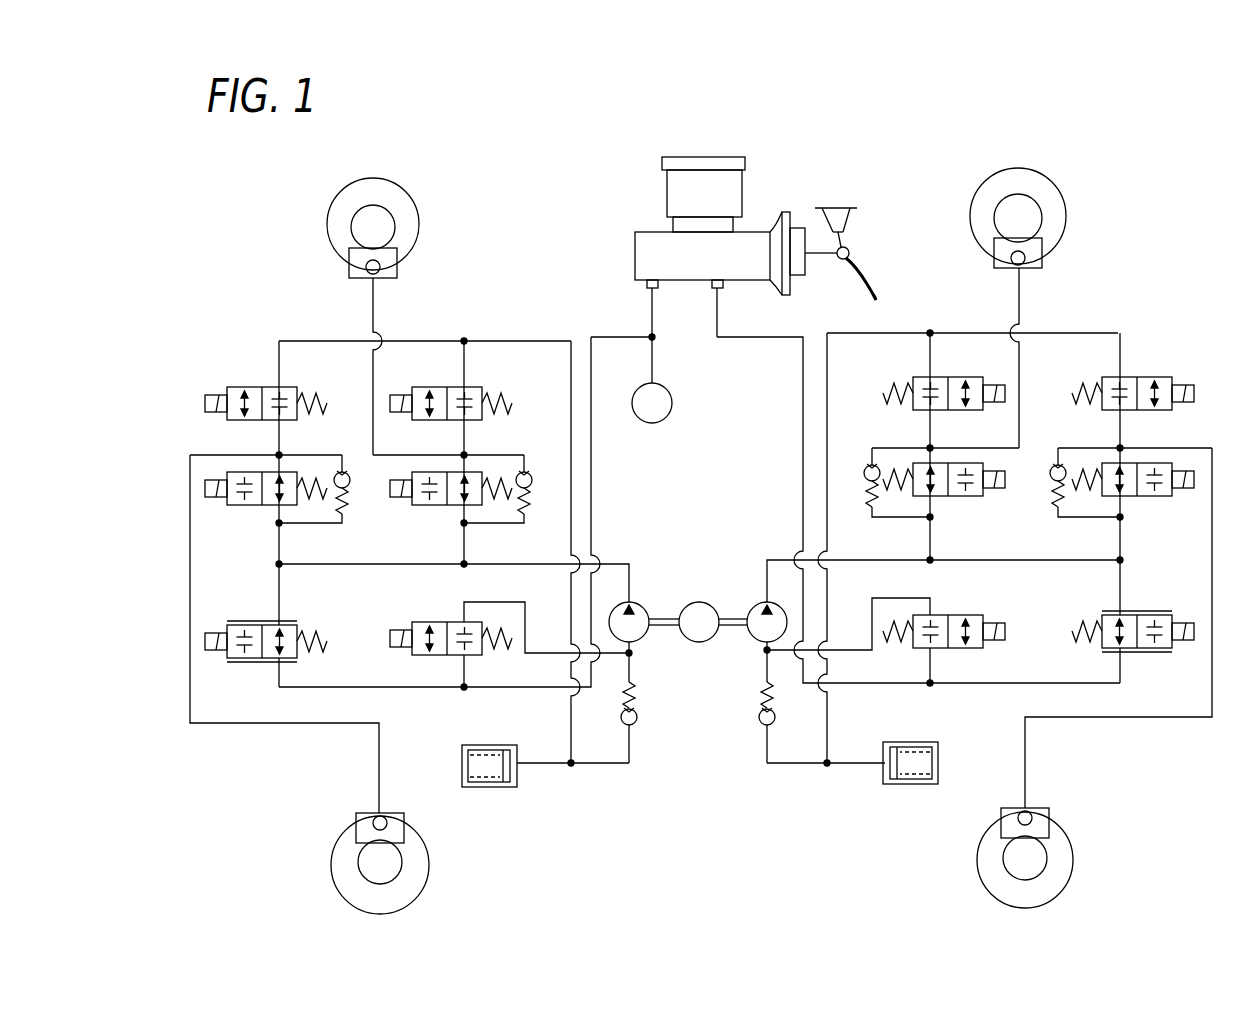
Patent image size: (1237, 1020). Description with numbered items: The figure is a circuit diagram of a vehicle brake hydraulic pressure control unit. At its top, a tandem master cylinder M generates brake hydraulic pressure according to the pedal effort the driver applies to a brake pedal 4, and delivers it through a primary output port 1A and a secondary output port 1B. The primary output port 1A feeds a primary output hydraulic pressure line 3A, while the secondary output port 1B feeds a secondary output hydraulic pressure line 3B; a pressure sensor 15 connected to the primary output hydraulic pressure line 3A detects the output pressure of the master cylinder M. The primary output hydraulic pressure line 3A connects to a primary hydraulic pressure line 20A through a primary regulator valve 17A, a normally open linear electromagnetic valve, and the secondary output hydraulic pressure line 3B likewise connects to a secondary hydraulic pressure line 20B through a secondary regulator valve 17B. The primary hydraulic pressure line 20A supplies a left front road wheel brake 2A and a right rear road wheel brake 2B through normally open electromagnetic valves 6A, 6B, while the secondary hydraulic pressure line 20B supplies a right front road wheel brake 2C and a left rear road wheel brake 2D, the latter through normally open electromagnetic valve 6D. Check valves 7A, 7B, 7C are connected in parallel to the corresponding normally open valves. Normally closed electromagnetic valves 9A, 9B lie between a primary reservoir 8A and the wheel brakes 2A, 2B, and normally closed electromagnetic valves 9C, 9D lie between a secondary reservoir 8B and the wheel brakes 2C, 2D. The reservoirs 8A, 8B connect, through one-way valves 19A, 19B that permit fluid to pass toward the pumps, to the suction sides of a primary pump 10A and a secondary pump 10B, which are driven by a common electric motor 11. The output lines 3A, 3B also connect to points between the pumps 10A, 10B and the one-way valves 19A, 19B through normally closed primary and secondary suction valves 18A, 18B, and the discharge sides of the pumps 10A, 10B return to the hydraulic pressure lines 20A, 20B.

The tandem master cylinder M is at (650, 234).
The primary output port 1A is at (647, 286).
The secondary output port 1B is at (722, 287).
The left front road wheel brake 2A is at (322, 848).
The right rear road wheel brake 2B is at (314, 218).
The right front road wheel brake 2C is at (1083, 829).
The left rear road wheel brake 2D is at (1078, 195).
The primary output hydraulic pressure line 3A is at (603, 337).
The secondary output hydraulic pressure line 3B is at (793, 337).
The brake pedal 4 is at (880, 278).
The normally open electromagnetic valve 6A is at (262, 507).
The normally open electromagnetic valve 6B is at (447, 507).
The normally open electromagnetic valve 6D is at (953, 497).
The check valve 7A is at (342, 471).
The check valve 7B is at (524, 471).
The check valve 7C is at (868, 463).
The primary reservoir 8A is at (478, 735).
The secondary reservoir 8B is at (934, 735).
The normally closed electromagnetic valve 9A is at (250, 387).
The normally closed electromagnetic valve 9B is at (466, 387).
The normally closed electromagnetic valve 9C is at (1136, 377).
The normally closed electromagnetic valve 9D is at (935, 377).
The primary pump 10A is at (657, 592).
The secondary pump 10B is at (758, 607).
The electric motor 11 is at (701, 644).
The pressure sensor 15 is at (676, 402).
The primary regulator valve 17A is at (272, 659).
The secondary regulator valve 17B is at (1146, 652).
The primary suction valve 18A is at (440, 622).
The secondary suction valve 18B is at (975, 600).
The one-way valve 19A is at (636, 720).
The one-way valve 19B is at (760, 720).
The primary hydraulic pressure line 20A is at (543, 548).
The secondary hydraulic pressure line 20B is at (1064, 560).